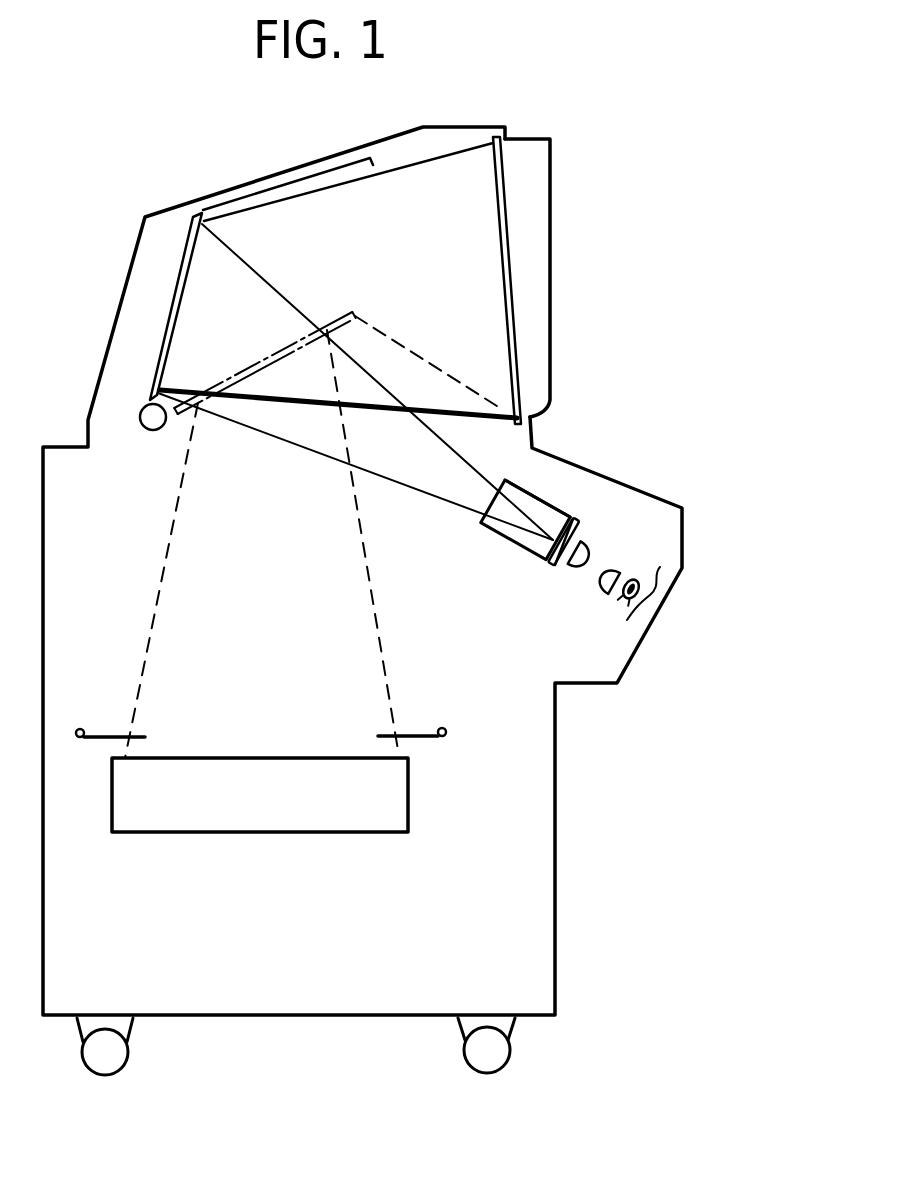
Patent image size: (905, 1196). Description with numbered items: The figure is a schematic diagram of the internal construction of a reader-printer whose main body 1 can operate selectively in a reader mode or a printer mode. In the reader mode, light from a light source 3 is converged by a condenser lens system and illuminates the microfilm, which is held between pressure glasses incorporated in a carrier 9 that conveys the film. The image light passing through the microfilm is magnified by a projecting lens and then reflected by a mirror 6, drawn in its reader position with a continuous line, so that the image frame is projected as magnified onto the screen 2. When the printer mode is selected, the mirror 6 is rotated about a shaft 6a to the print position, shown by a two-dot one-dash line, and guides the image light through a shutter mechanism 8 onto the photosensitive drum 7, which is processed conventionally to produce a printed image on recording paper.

The main body 1 is at (98, 279).
The screen 2 is at (510, 262).
The light source 3 is at (634, 577).
The mirror 6 is at (188, 280).
The shaft 6a is at (150, 428).
The photosensitive drum 7 is at (260, 815).
The shutter mechanism 8 is at (417, 734).
The carrier 9 is at (556, 546).